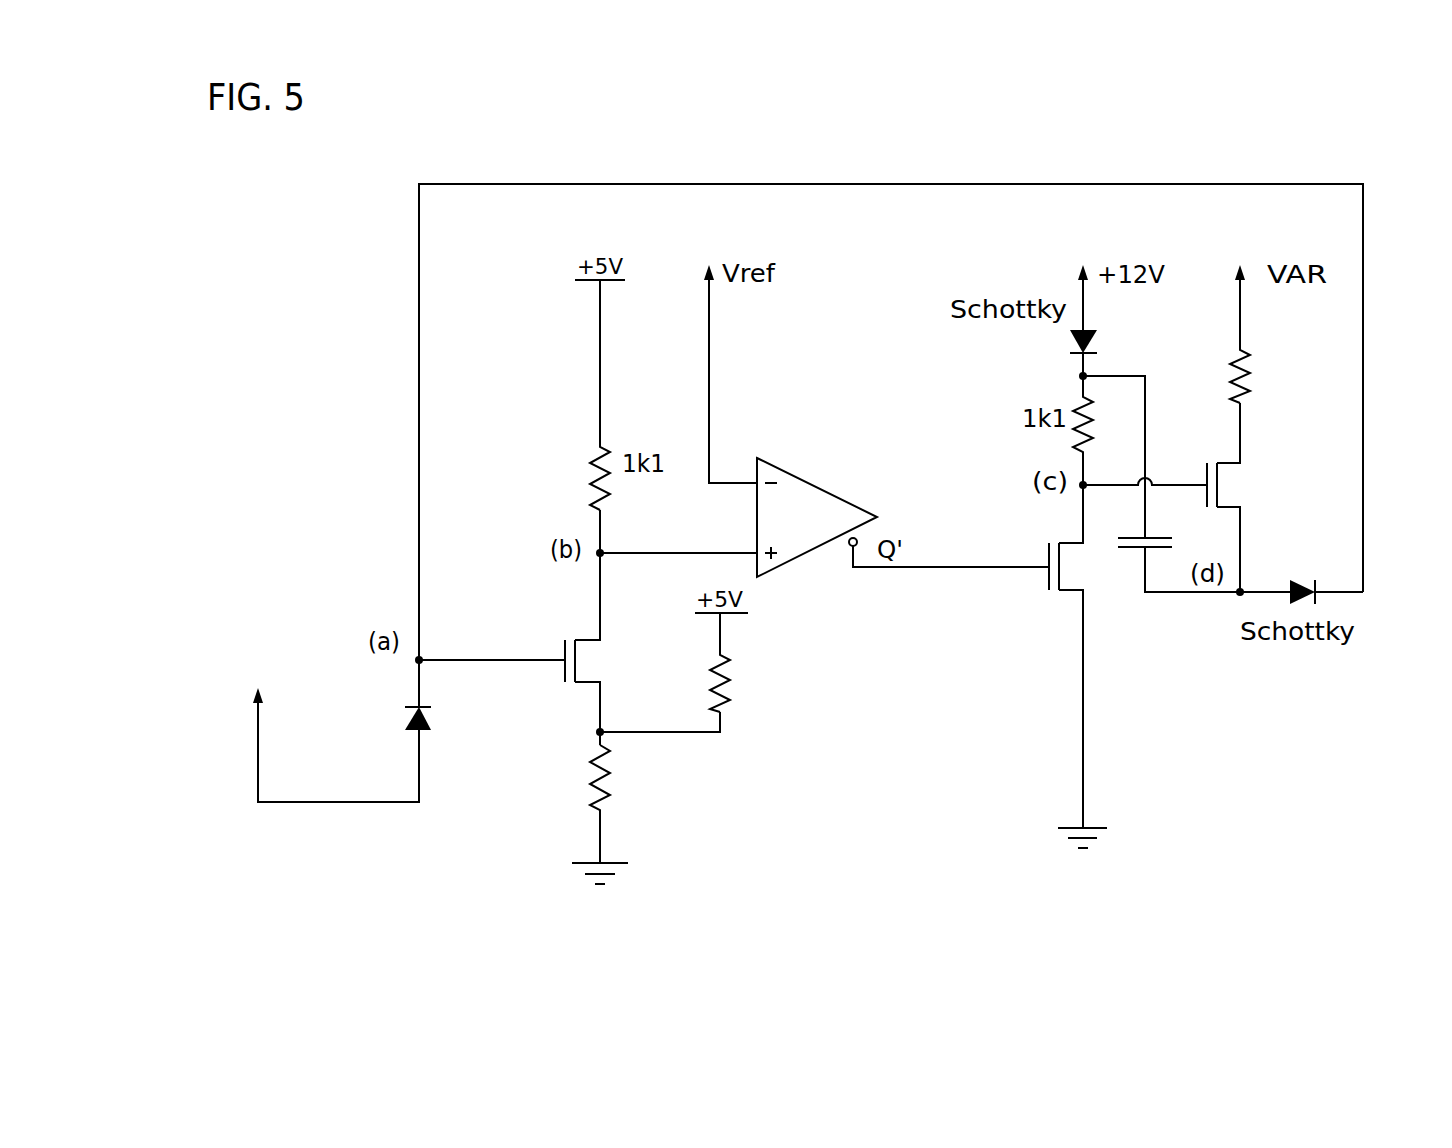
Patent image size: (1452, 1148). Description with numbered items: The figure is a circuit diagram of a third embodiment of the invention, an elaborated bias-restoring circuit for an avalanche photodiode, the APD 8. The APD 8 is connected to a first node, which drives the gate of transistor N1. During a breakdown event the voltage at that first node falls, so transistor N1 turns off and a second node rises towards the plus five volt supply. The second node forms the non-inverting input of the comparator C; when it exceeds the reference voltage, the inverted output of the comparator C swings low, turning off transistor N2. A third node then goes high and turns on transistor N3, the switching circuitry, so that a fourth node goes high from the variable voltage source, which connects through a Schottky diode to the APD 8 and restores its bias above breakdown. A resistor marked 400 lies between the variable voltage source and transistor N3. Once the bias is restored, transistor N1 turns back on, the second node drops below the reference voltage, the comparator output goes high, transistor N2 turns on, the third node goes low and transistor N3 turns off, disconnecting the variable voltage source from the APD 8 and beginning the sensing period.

The APD 8 is at (378, 731).
The transistor N1 is at (605, 627).
The transistor N2 is at (1058, 656).
The transistor N3 is at (1209, 497).
The comparator C is at (817, 516).
The 400 ohm resistor 400 is at (1272, 339).